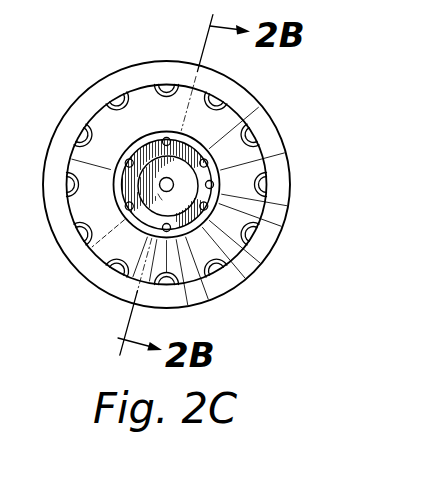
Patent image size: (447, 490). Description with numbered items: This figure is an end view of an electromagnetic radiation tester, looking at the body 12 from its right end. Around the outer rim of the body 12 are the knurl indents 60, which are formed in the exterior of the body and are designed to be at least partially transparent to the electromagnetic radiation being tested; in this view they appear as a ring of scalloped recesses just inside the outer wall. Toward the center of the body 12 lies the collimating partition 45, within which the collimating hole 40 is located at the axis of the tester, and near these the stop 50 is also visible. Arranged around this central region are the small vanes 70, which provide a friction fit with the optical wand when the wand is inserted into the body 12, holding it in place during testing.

The body 12 is at (108, 73).
The knurled indentations 60 is at (165, 85).
The small vanes 70 is at (188, 150).
The stop 50 is at (207, 192).
The collimating hole 40 is at (160, 188).
The collimating partition 45 is at (162, 200).